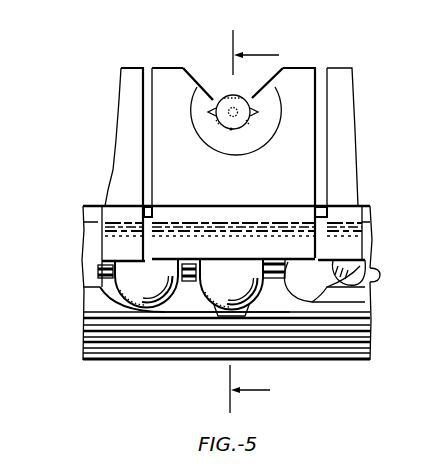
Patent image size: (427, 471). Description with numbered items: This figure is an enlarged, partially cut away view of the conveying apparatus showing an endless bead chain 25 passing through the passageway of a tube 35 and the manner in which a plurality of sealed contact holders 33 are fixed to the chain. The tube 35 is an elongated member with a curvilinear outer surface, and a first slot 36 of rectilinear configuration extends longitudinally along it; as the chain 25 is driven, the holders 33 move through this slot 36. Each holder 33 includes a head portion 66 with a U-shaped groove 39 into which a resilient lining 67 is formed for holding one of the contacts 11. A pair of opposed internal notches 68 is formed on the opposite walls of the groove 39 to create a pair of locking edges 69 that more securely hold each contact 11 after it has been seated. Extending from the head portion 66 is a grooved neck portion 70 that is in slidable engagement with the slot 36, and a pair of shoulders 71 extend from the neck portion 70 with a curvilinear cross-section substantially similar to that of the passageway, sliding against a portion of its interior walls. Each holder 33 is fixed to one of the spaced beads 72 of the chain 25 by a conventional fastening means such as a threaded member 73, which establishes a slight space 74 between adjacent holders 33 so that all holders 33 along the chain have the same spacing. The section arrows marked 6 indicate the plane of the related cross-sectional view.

The section line 6- 6 is at (261, 221).
The contact 11 is at (254, 66).
The endless bead chain 25 is at (199, 284).
The holder 33 is at (113, 71).
The tube 35 is at (372, 352).
The first slot 36 is at (151, 211).
The U-shaped groove 39 is at (231, 130).
The head portion 66 is at (297, 75).
The resilient lining 67 is at (195, 125).
The internal notch 68 is at (275, 117).
The locking edge 69 is at (222, 92).
The neck portion 70 is at (227, 217).
The shoulder 71 is at (302, 243).
The bead 72 is at (142, 275).
The threaded member 73 is at (300, 302).
The space 74 is at (148, 75).